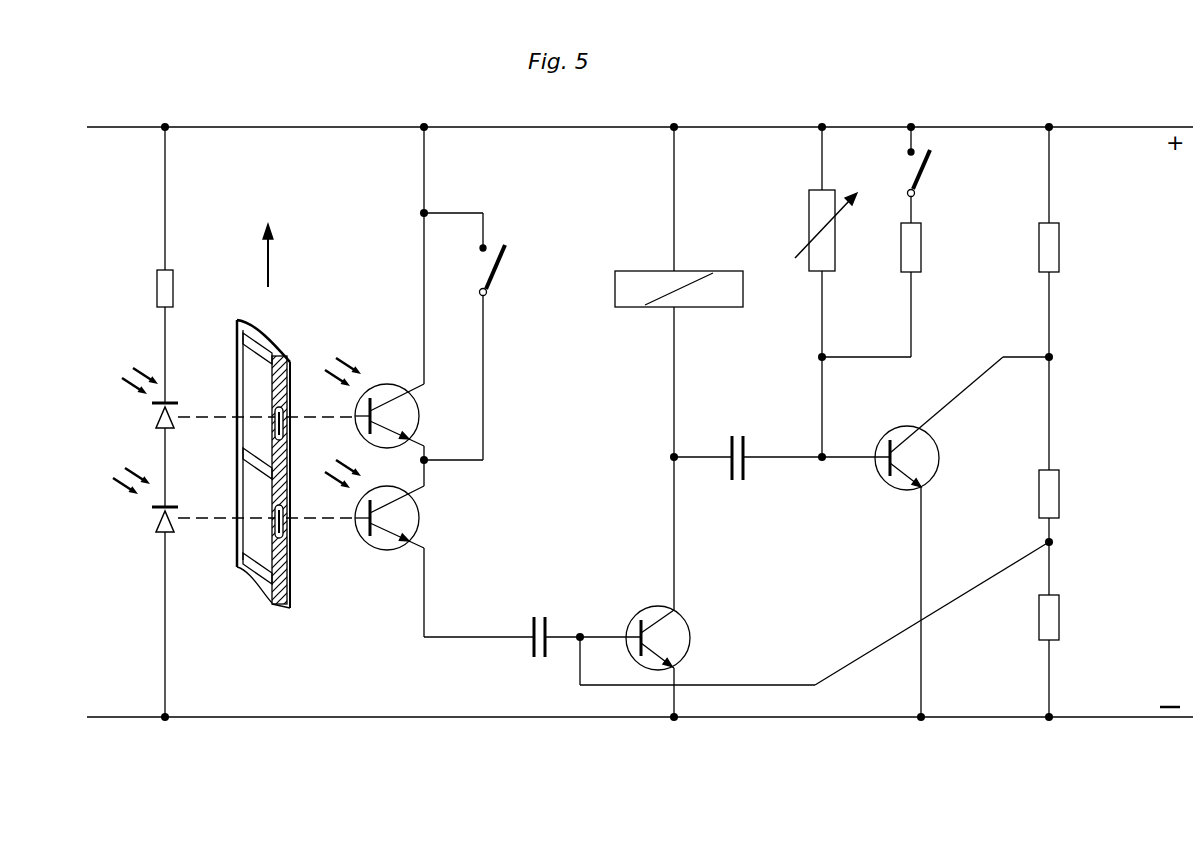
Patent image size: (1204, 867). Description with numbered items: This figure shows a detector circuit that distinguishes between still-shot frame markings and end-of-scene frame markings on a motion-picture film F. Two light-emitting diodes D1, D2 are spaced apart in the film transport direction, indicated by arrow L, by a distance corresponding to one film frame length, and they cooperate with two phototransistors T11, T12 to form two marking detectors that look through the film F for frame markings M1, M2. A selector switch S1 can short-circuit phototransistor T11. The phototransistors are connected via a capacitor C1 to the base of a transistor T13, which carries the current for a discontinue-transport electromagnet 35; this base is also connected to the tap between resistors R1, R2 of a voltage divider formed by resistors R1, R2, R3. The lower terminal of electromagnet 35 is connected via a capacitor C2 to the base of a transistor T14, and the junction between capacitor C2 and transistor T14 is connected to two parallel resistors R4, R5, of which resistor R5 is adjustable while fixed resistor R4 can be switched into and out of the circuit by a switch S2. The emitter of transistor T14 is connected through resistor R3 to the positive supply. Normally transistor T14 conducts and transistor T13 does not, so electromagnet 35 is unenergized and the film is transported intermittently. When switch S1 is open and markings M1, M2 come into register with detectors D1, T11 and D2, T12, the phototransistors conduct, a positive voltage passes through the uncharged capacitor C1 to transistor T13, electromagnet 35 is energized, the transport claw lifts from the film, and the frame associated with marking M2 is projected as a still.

The light-emitting diode D1 is at (157, 418).
The light-emitting diode D2 is at (157, 522).
The film F is at (250, 548).
The frame marking M1 is at (284, 432).
The interrupt-transport frame marking M2 is at (284, 535).
The arrow indicating film transport direction L is at (269, 258).
The phototransistor T11 is at (417, 432).
The phototransistor T12 is at (417, 534).
The selector switch S1 is at (503, 258).
The capacitor C1 is at (531, 628).
The transistor T13 is at (684, 612).
The discontinue-transport electromagnet 35 is at (632, 280).
The capacitor C2 is at (746, 448).
The transistor T14 is at (935, 436).
The adjustable resistor R5 is at (808, 232).
The switch S2 is at (928, 168).
The fixed resistor R4 is at (916, 252).
The resistor R3 is at (1055, 252).
The resistor R1 is at (1058, 508).
The resistor R2 is at (1056, 614).